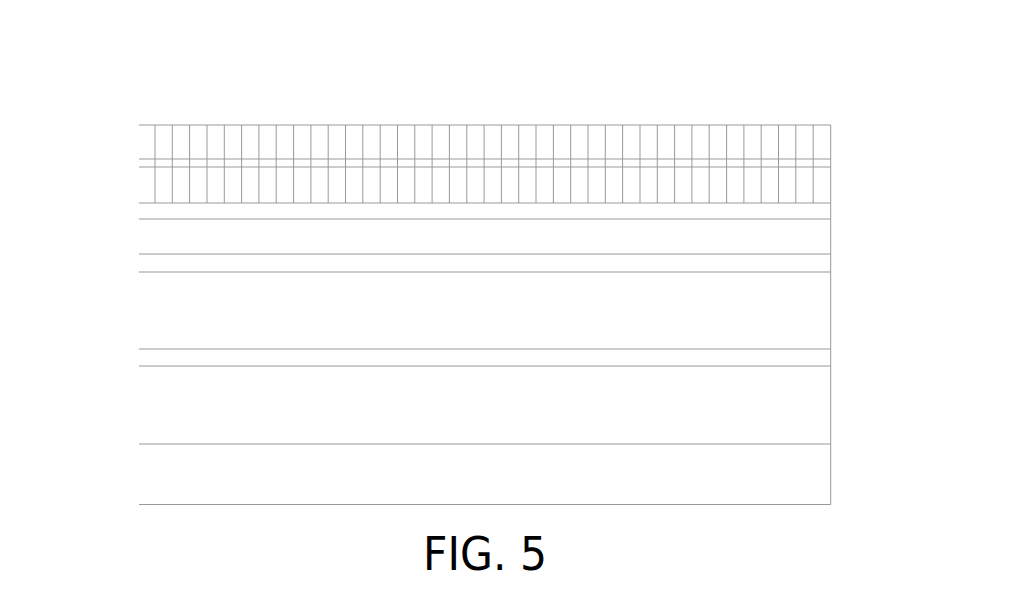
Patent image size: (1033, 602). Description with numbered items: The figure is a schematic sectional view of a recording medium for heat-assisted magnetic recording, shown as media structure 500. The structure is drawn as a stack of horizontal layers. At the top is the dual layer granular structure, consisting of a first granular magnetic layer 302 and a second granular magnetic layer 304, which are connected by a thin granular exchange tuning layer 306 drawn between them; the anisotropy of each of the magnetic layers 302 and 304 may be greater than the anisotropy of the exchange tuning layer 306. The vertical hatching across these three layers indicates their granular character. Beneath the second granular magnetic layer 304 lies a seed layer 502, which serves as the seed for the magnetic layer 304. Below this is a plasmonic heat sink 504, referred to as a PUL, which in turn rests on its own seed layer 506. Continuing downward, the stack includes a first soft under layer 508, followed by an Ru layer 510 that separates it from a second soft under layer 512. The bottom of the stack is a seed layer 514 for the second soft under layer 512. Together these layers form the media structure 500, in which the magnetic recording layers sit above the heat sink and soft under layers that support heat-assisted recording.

The media structure 500 is at (200, 98).
The first granular magnetic layer 302 is at (831, 141).
The second granular magnetic layer 304 is at (831, 185).
The granular exchange tuning layer 306 is at (139, 162).
The seed layer 502 is at (139, 210).
The plasmonic heat sink 504 is at (831, 237).
The seed layer 506 is at (139, 263).
The first soft under layer 508 is at (831, 310).
The Ru layer 510 is at (139, 358).
The second soft under layer 512 is at (831, 405).
The seed layer 514 is at (831, 473).